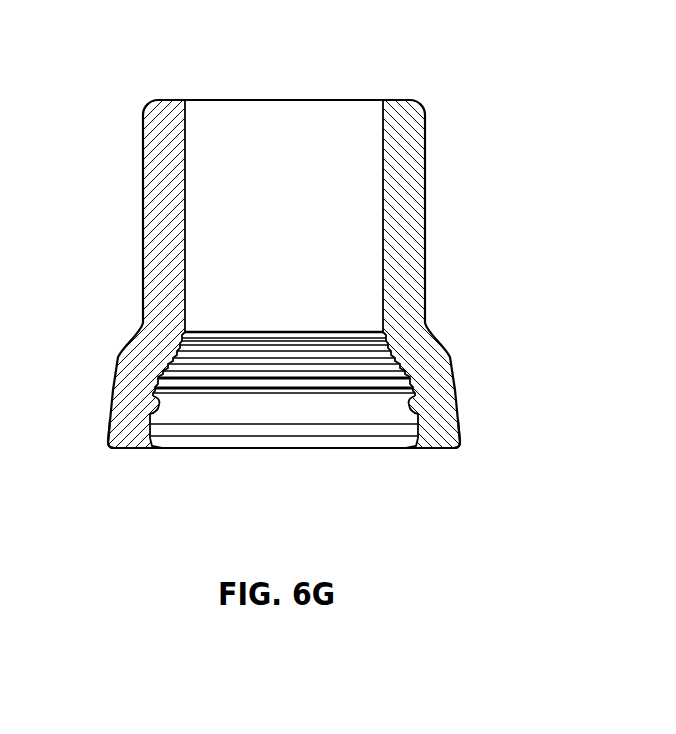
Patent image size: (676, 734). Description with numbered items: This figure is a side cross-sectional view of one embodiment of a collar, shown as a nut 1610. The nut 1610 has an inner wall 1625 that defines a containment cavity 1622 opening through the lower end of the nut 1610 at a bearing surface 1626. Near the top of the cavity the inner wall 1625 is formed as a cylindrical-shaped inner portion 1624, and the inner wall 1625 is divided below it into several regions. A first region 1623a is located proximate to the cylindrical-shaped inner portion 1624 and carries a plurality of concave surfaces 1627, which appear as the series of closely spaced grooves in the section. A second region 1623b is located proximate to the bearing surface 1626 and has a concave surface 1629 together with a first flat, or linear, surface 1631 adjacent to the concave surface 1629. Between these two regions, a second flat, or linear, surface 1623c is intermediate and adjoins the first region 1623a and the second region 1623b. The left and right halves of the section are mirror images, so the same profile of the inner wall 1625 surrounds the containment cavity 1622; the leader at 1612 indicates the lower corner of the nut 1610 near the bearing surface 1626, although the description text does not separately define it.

The nut 1610 is at (192, 68).
The cylindrical-shaped inner portion 1624 is at (384, 225).
The concave surfaces 1627 is at (383, 347).
The first region 1623a is at (407, 363).
The inner wall 1625 is at (152, 405).
The second flat surface 1623c is at (412, 402).
The second region 1623b is at (414, 433).
The concave surface 1629 is at (407, 429).
The first flat surface 1631 is at (415, 443).
The containment cavity 1622 is at (203, 413).
The bottom left edge 1612 is at (138, 450).
The bearing surface 1626 is at (445, 450).